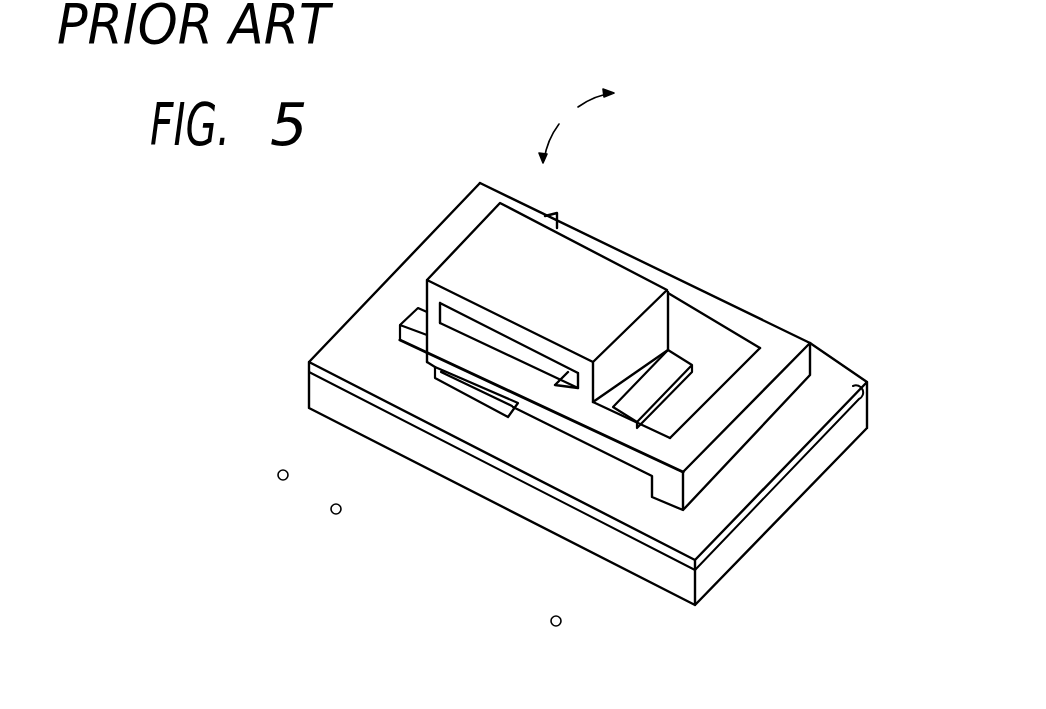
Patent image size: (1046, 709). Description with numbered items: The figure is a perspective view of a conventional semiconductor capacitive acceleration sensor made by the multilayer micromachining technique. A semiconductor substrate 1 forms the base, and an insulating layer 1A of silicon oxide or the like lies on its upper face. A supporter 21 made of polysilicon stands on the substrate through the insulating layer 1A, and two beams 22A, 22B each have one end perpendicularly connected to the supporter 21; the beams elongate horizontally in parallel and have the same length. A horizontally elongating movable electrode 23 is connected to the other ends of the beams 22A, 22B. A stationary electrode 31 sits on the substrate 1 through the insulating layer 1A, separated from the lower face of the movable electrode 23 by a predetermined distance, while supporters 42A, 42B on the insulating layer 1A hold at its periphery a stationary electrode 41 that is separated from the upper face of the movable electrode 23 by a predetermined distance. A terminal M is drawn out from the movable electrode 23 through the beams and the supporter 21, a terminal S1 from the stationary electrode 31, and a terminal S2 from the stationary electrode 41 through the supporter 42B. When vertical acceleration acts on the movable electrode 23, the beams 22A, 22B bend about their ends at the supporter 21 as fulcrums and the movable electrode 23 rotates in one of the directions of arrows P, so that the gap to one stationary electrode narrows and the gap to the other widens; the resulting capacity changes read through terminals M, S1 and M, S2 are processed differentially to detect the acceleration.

The semiconductor substrate 1 is at (857, 421).
The insulating layer 1A is at (858, 377).
The supporter 21 is at (813, 363).
The beam 22A is at (703, 290).
The beam 22B is at (620, 425).
The movable electrode 23 is at (540, 375).
The stationary electrode 31 is at (487, 402).
The stationary electrode 41 is at (487, 237).
The supporter 42A is at (660, 347).
The supporter 42B is at (421, 310).
The terminal S1 is at (454, 387).
The terminal S2 is at (412, 338).
The terminal M is at (666, 507).
The arrows P is at (576, 126).